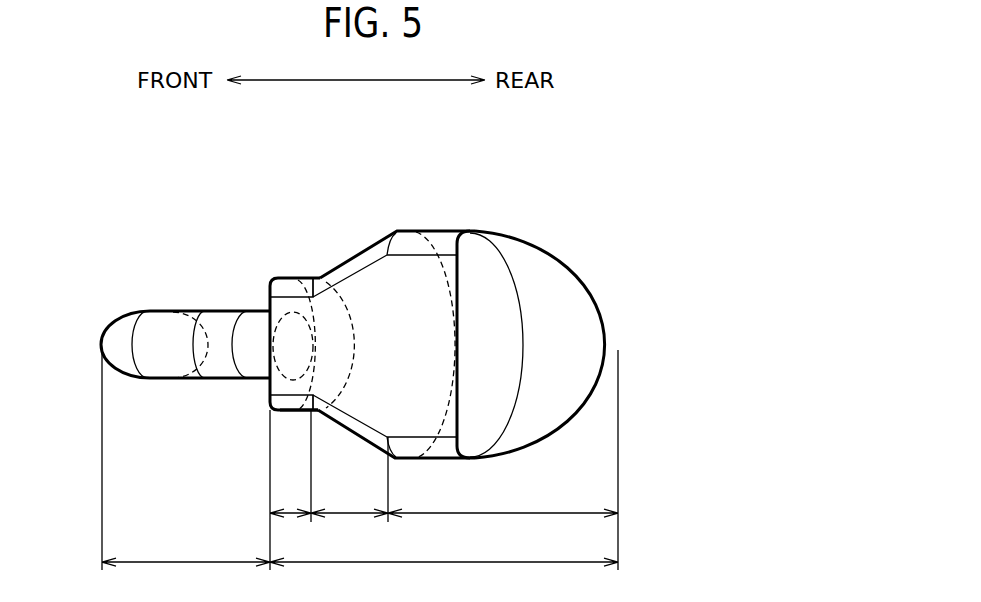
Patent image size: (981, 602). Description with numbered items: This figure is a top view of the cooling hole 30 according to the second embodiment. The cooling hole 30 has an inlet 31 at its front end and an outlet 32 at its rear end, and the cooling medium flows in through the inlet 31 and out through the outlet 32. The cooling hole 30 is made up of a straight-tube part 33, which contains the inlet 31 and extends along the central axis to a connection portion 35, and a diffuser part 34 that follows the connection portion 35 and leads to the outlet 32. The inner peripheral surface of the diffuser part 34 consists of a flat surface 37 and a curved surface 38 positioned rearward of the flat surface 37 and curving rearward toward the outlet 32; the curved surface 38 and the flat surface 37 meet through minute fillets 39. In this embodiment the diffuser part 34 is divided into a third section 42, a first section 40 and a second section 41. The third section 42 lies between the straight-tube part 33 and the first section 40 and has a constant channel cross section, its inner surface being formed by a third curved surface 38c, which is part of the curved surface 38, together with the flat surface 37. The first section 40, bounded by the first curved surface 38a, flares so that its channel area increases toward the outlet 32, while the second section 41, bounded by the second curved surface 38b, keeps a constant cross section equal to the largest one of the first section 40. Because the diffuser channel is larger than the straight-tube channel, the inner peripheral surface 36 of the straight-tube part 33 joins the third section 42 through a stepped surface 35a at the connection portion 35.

The cooling hole 30 is at (144, 190).
The inlet 31 is at (195, 367).
The outlet 32 is at (588, 281).
The straight-tube part 33 is at (186, 461).
The diffuser part 34 is at (444, 548).
The connection portion 35 is at (262, 269).
The stepped surface 35a is at (280, 388).
The inner peripheral surface 36 is at (236, 312).
The flat surface 37 is at (413, 360).
The curved surface 38 is at (366, 295).
The first curved surface 38a is at (372, 247).
The second curved surface 38b is at (447, 245).
The third curved surface 38c is at (303, 278).
The fillet 39 is at (290, 403).
The first section 40 is at (349, 479).
The second section 41 is at (503, 460).
The third section 42 is at (290, 490).